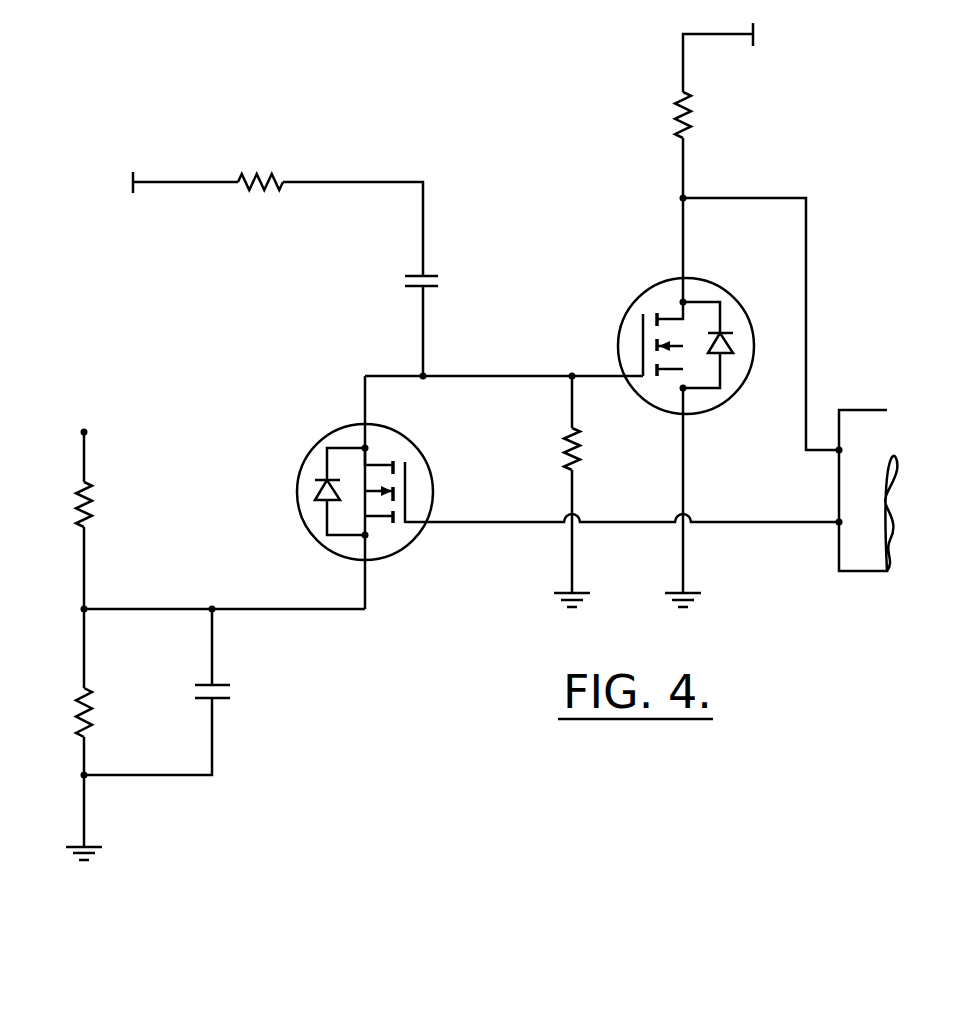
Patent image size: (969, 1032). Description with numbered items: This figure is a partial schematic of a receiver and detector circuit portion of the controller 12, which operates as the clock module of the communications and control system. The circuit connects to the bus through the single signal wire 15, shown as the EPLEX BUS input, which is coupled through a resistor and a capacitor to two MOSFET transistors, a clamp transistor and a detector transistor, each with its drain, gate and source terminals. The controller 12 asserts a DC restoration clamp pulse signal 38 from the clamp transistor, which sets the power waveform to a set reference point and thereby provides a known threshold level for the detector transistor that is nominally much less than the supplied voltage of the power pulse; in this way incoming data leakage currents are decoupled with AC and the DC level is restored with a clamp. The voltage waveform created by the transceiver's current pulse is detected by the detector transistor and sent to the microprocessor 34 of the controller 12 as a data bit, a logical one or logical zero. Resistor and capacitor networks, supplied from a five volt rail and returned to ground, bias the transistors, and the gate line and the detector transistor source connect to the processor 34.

The controller 12 is at (440, 110).
The single signal wire 15 is at (185, 182).
The processor 34 is at (850, 560).
The DC restoration clamp pulse signal 38 is at (494, 496).